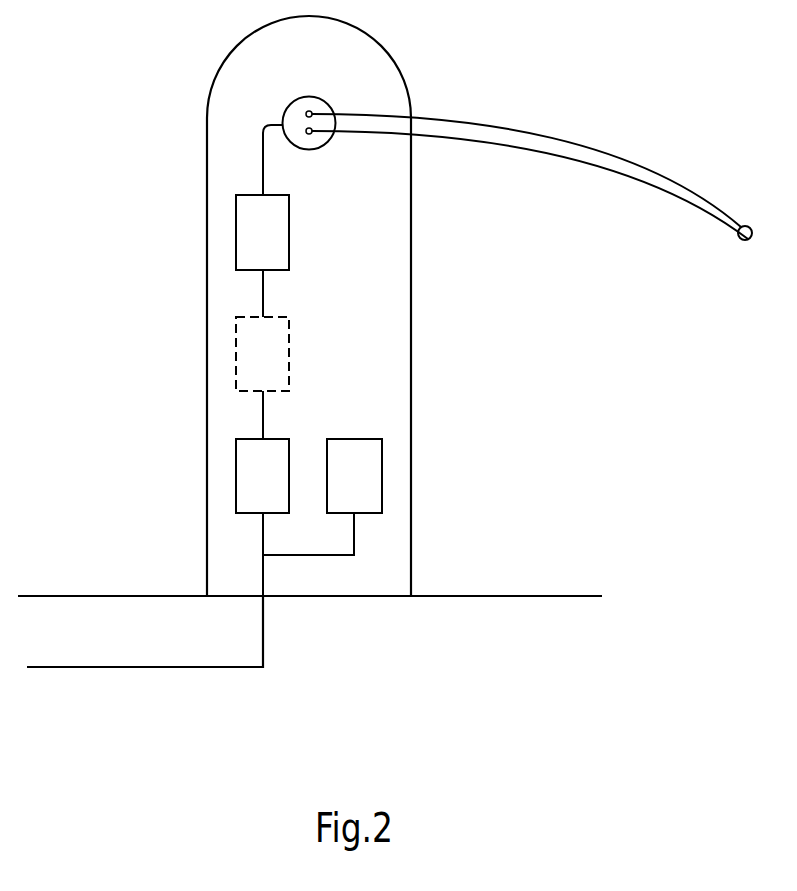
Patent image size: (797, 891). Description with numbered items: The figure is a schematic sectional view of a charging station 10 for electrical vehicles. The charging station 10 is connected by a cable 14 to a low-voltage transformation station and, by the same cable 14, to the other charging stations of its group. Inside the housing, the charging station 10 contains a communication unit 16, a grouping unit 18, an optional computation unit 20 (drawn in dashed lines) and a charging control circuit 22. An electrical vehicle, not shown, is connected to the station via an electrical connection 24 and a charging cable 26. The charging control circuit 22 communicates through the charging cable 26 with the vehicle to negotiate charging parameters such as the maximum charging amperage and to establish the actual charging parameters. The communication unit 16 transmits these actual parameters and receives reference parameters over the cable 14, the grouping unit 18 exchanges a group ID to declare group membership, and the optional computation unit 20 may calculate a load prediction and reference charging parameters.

The charging station 10 is at (411, 287).
The cable 14 is at (100, 667).
The communication unit 16 is at (247, 473).
The grouping unit 18 is at (370, 473).
The computation unit 20 is at (248, 352).
The charging control circuit 22 is at (248, 230).
The electrical connection 24 is at (293, 115).
The charging cable 26 is at (615, 167).